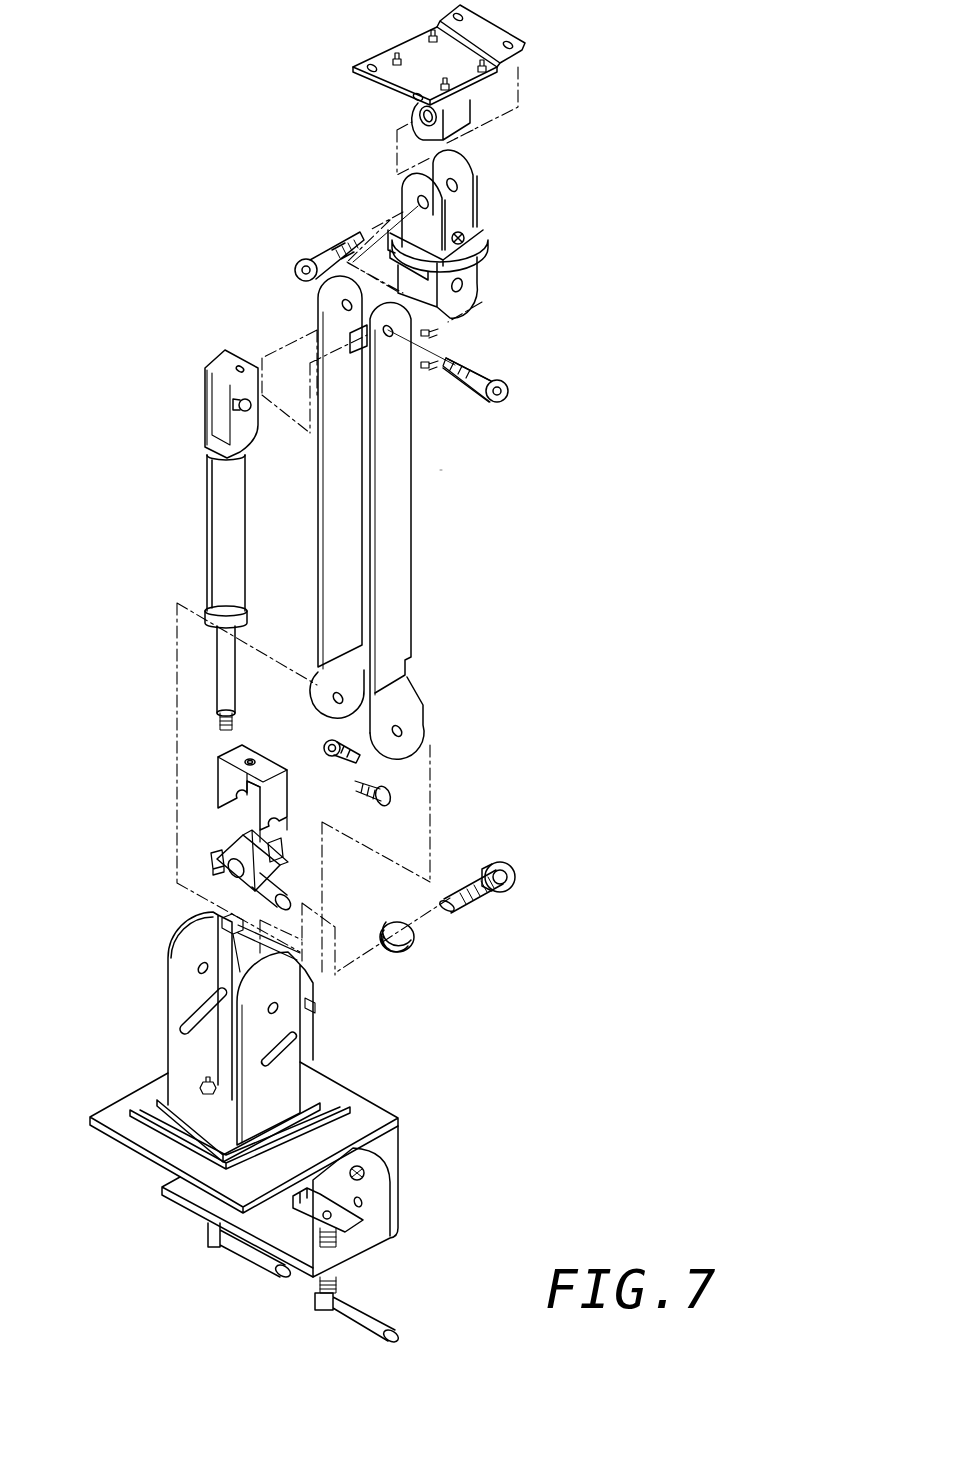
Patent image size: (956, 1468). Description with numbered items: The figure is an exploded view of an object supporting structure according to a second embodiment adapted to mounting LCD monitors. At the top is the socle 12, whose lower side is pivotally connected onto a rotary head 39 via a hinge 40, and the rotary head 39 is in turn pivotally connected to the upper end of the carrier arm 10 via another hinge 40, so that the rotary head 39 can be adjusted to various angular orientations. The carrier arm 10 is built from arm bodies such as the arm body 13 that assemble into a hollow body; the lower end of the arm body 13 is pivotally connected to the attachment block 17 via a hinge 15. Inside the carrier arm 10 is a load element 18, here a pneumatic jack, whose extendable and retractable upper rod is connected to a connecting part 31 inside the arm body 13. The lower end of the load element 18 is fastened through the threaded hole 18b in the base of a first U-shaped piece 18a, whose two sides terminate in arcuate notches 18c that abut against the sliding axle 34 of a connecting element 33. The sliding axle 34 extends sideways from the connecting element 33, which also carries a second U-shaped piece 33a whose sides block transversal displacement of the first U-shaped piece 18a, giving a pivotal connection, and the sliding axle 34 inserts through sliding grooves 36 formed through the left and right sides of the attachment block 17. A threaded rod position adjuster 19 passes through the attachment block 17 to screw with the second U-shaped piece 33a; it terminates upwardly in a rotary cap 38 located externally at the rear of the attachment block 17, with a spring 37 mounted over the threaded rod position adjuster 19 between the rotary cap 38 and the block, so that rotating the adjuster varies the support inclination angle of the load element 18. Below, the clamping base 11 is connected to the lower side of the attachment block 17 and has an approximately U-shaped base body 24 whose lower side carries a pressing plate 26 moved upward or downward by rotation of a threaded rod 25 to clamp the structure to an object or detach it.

The carrier arm 10 is at (468, 470).
The clamping base 11 is at (475, 1125).
The socle 12 is at (333, 40).
The arm body 13 is at (400, 545).
The hinge 15 is at (385, 790).
The attachment block 17 is at (300, 1046).
The load element 18 is at (215, 506).
The first U-shaped piece 18a is at (217, 780).
The threaded hole 18b is at (252, 758).
The arcuate notch 18c is at (322, 815).
The threaded rod position adjuster 19 is at (478, 907).
The base body 24 is at (397, 1165).
The threaded rod 25 is at (340, 1288).
The pressing plate 26 is at (357, 1223).
The connecting part 31 is at (200, 393).
The connecting element 33 is at (240, 874).
The second U-shaped piece 33a is at (223, 850).
The sliding axle 34 is at (216, 863).
The sliding groove 36 is at (183, 1038).
The spring 37 is at (413, 943).
The rotary cap 38 is at (520, 880).
The rotary head 39 is at (472, 257).
The hinge 40 is at (325, 243).